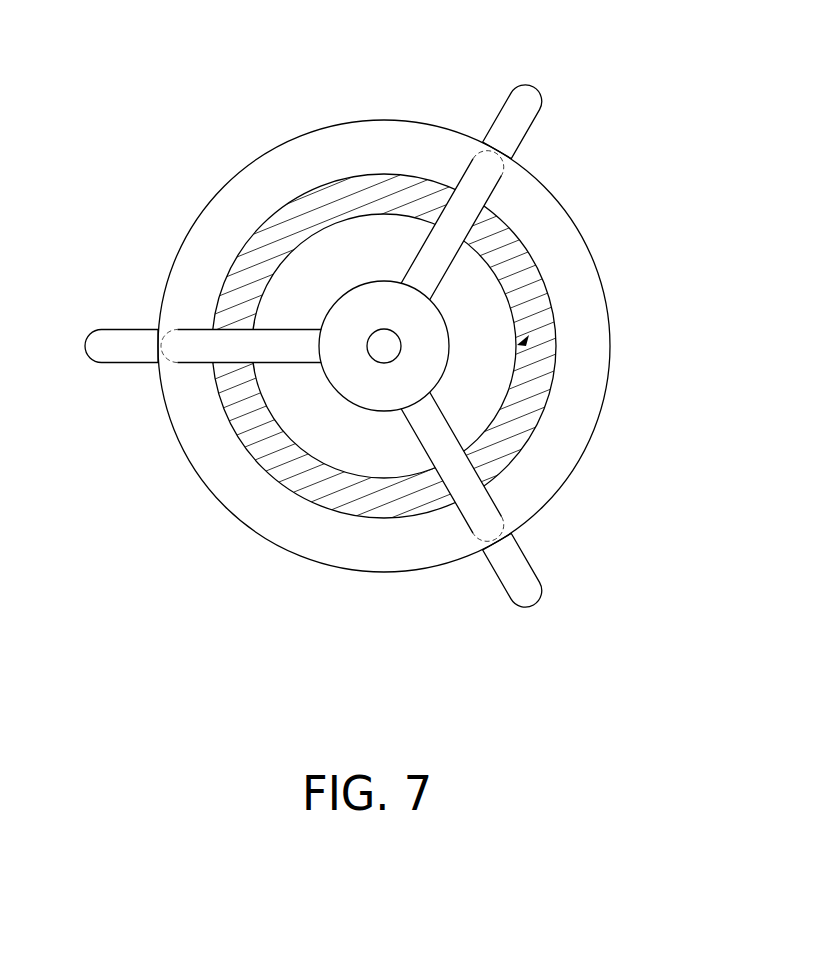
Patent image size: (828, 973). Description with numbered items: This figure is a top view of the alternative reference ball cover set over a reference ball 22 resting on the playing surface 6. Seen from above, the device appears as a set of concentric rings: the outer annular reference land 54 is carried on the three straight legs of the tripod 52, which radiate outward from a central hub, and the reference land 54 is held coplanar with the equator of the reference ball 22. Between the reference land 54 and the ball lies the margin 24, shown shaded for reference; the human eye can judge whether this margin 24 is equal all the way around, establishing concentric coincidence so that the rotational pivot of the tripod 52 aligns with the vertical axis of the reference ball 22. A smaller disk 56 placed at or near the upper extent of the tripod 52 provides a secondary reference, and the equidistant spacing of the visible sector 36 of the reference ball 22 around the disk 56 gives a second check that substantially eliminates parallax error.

The playing surface 6 is at (394, 320).
The reference ball 22 is at (550, 325).
The margin 24 is at (517, 408).
The visible sector 36 is at (465, 303).
The tripod 52 is at (463, 207).
The reference land 54 is at (553, 218).
The disk 56 is at (363, 315).